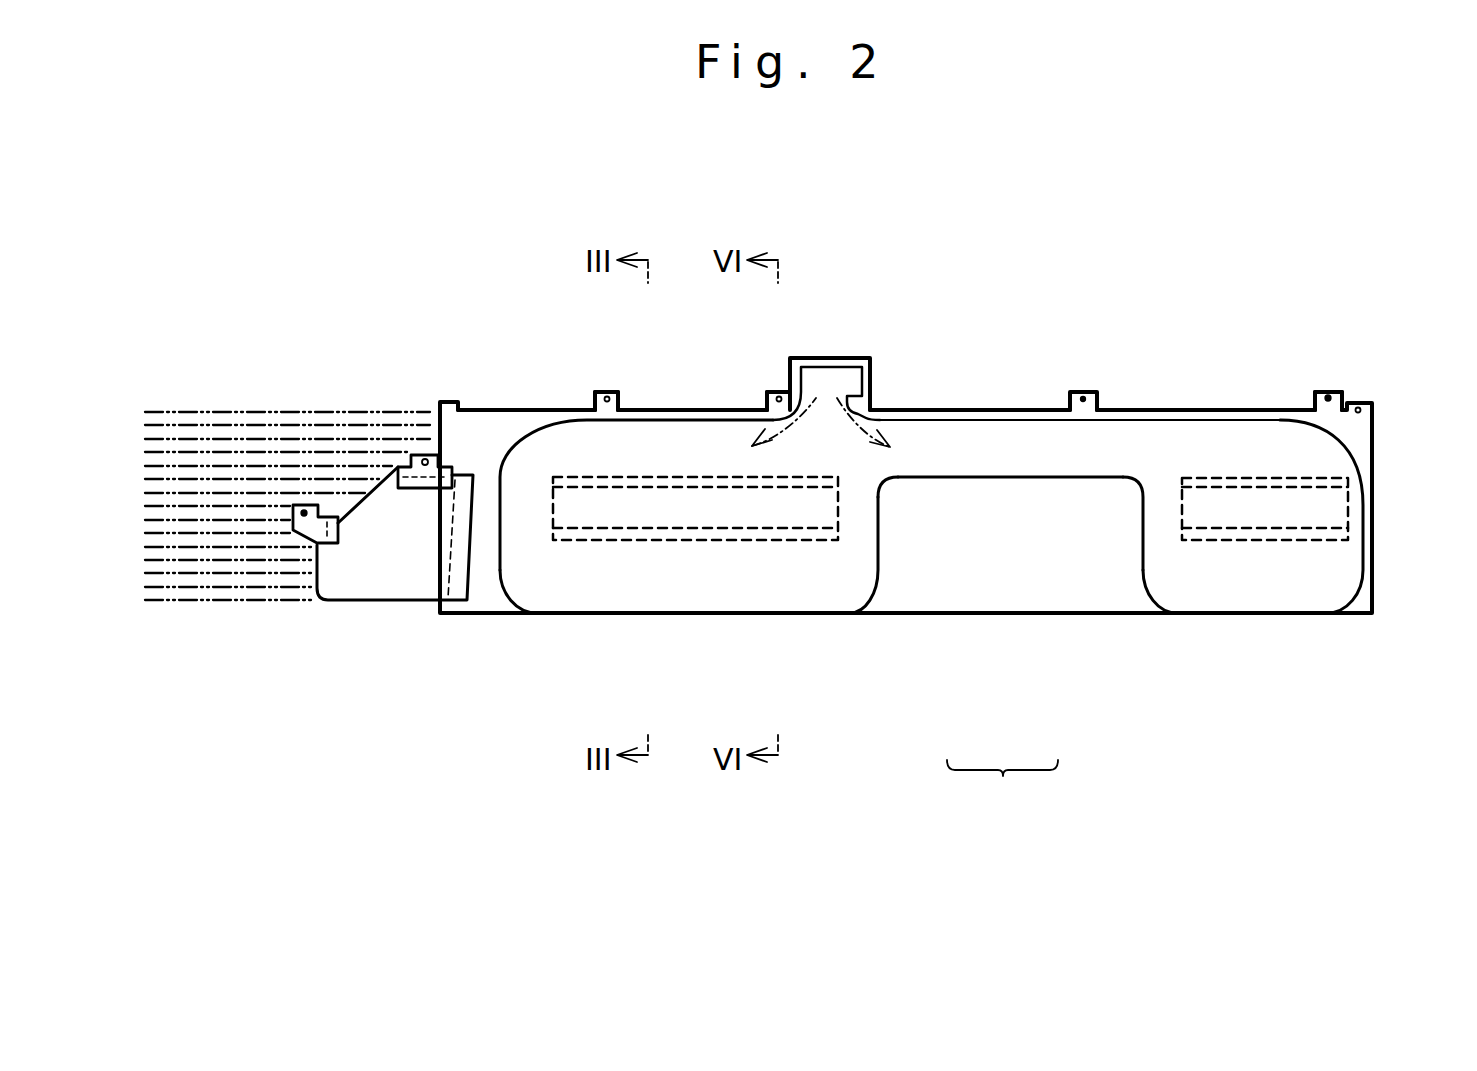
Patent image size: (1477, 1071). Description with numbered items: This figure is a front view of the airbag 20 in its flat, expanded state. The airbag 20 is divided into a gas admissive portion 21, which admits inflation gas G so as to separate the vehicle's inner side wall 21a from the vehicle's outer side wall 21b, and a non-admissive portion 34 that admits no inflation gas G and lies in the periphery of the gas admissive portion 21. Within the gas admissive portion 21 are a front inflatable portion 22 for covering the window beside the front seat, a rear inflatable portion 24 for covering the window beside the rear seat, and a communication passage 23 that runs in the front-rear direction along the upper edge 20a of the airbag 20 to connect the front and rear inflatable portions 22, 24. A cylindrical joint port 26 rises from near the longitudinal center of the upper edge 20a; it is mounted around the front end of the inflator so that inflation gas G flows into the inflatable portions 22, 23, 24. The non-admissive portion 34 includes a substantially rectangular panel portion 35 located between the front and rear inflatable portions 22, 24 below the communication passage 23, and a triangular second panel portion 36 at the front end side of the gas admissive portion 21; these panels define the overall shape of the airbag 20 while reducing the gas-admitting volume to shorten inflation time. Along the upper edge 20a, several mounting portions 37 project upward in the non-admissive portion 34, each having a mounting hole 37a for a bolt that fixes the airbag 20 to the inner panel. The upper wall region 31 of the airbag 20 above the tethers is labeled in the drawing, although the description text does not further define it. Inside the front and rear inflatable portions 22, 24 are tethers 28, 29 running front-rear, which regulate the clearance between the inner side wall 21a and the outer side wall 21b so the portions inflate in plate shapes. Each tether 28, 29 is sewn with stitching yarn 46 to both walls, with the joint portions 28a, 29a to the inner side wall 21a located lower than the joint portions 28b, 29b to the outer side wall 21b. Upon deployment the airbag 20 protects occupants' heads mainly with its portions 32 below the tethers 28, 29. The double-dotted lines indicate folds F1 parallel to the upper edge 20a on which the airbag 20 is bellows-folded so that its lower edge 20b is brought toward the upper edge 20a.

The airbag 20 is at (325, 193).
The upper edge 20a is at (983, 410).
The lower edge 20b is at (943, 598).
The gas admissive portion 21 is at (1002, 788).
The inner side wall 21a is at (546, 597).
The outer side wall 21b is at (593, 597).
The front inflatable portion 22 is at (828, 601).
The communication passage 23 is at (1012, 469).
The rear inflatable portion 24 is at (1175, 595).
The joint port 26 is at (827, 367).
The tether 28 is at (675, 558).
The joint portion 28a is at (752, 540).
The joint portion 28b is at (597, 477).
The tether 29 is at (1258, 562).
The joint portion 29a is at (1327, 540).
The joint portion 29b is at (1330, 477).
The upper wall 31 is at (680, 442).
The portions below the tethers 32 is at (720, 597).
The non-admissive portion 34 is at (917, 418).
The panel portion 35 is at (1073, 600).
The second panel portion 36 is at (400, 570).
The mounting portion 37 is at (312, 532).
The mounting hole 37a is at (304, 510).
The stitching yarn 46 is at (1140, 418).
The folds F1 is at (206, 408).
The inflation gas G is at (820, 433).